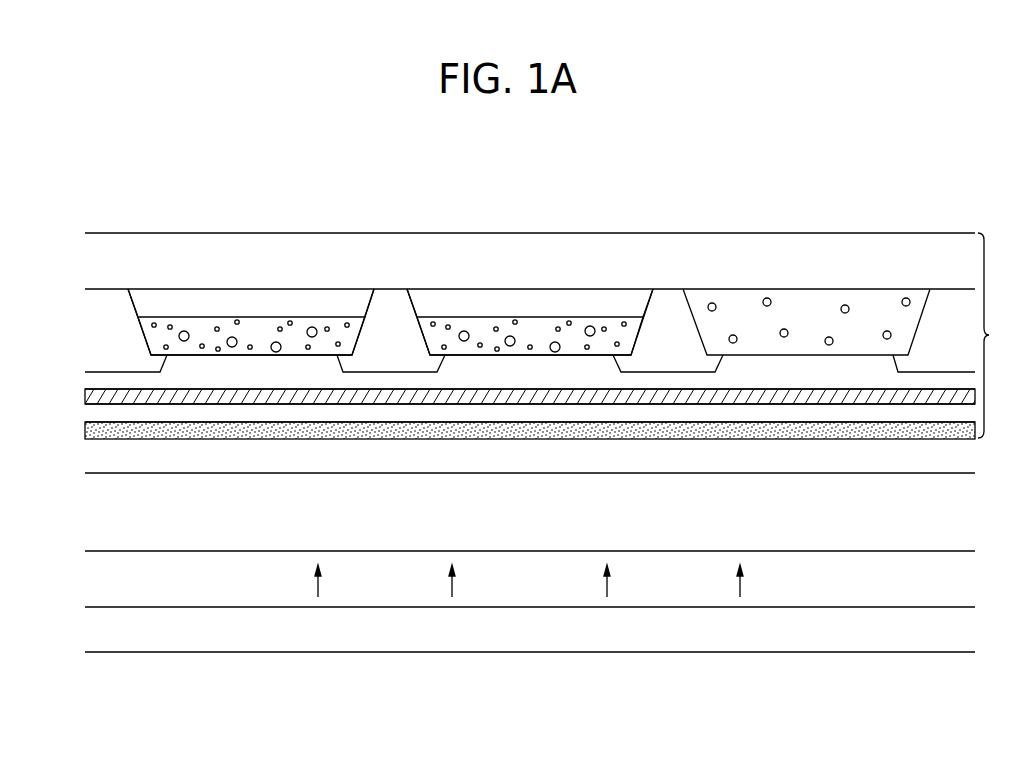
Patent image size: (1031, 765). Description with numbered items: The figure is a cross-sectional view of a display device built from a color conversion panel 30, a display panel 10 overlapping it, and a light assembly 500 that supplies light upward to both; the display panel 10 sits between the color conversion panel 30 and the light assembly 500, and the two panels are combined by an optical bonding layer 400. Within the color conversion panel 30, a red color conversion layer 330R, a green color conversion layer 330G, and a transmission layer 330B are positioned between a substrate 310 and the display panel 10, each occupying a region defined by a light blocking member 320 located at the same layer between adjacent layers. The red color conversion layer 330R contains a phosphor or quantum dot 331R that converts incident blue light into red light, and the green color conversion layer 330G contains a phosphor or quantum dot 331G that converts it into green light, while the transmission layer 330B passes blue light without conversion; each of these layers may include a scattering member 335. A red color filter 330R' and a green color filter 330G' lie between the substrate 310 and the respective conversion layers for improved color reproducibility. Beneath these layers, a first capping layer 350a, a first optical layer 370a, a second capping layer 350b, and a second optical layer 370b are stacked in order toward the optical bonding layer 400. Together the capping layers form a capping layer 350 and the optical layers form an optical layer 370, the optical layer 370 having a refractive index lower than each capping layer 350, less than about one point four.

The display panel 10 is at (95, 517).
The color conversion panel 30 is at (995, 335).
The substrate 310 is at (95, 254).
The light blocking member 320 is at (95, 320).
The red color conversion layer 330R is at (251, 266).
The red color filter 330R' is at (248, 247).
The quantum dot 331R is at (258, 330).
The green color conversion layer 330G is at (530, 266).
The green color filter 330G' is at (528, 247).
The quantum dot 331G is at (537, 330).
The transmission layer 330B is at (815, 310).
The scattering member 335 is at (312, 326).
The capping layer 350 is at (794, 726).
The first capping layer 350a is at (95, 382).
The second capping layer 350b is at (95, 414).
The optical layer 370 is at (943, 726).
The first optical layer 370a is at (95, 390).
The second optical layer 370b is at (97, 432).
The optical bonding layer 400 is at (95, 456).
The light assembly 500 is at (95, 628).